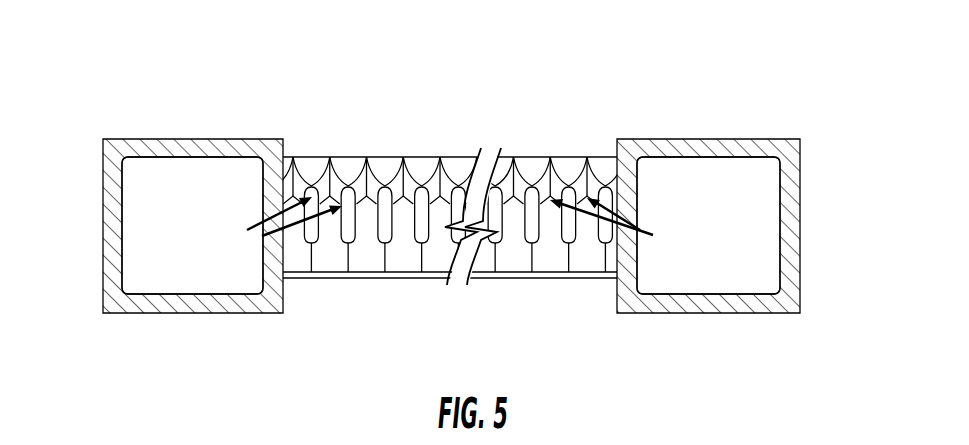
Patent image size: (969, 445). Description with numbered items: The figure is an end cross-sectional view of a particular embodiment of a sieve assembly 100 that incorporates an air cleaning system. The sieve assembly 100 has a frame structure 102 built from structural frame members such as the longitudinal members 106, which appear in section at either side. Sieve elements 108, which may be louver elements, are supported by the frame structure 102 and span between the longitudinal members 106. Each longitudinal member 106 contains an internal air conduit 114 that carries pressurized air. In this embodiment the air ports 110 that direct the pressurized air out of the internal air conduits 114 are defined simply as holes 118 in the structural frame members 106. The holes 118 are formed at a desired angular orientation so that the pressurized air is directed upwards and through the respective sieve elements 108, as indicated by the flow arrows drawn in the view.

The sieve assembly 100 is at (659, 58).
The frame structure 102 is at (169, 133).
The longitudinal members 106 is at (207, 313).
The sieve elements 108 is at (343, 163).
The air ports 110 is at (252, 213).
The internal air conduits 114 is at (135, 209).
The holes 118 is at (260, 234).